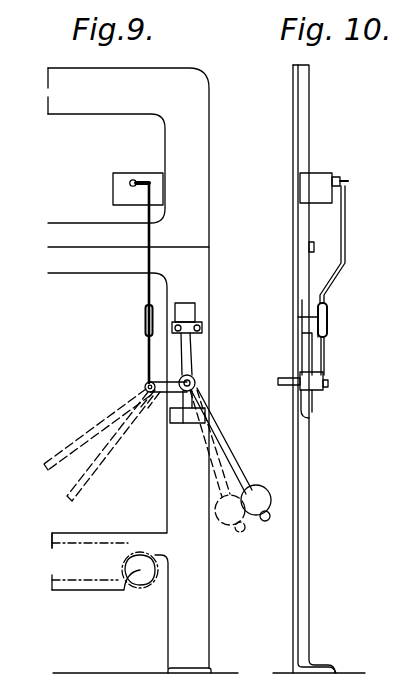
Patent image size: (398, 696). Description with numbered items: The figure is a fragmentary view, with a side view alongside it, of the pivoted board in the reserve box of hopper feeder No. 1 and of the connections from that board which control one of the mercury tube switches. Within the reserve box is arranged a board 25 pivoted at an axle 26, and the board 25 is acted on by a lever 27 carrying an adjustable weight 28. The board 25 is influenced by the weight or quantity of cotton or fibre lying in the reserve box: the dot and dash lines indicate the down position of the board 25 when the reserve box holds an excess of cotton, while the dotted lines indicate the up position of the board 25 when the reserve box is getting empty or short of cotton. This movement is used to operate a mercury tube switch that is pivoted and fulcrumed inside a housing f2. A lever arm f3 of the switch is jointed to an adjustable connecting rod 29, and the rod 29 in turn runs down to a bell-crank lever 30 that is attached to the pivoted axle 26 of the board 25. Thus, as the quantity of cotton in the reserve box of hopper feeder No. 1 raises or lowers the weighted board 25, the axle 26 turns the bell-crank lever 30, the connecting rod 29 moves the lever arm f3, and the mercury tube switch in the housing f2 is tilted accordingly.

In FIG. 9, the housing f2 is at (118, 188).
In FIG. 10, the housing f2 is at (313, 183).
In FIG. 9, the lever arm f3 is at (137, 180).
In FIG. 9, the hopper feeder No. 1 is at (63, 371).
In FIG. 9, the board 25 is at (99, 407).
In FIG. 9, the pivoted axle 26 is at (195, 382).
In FIG. 10, the pivoted axle 26 is at (329, 378).
In FIG. 9, the lever 27 is at (234, 462).
In FIG. 9, the adjustable weight 28 is at (254, 512).
In FIG. 9, the adjustable connecting rod 29 is at (142, 321).
In FIG. 10, the adjustable connecting rod 29 is at (347, 245).
In FIG. 9, the bell-crank lever 30 is at (175, 377).